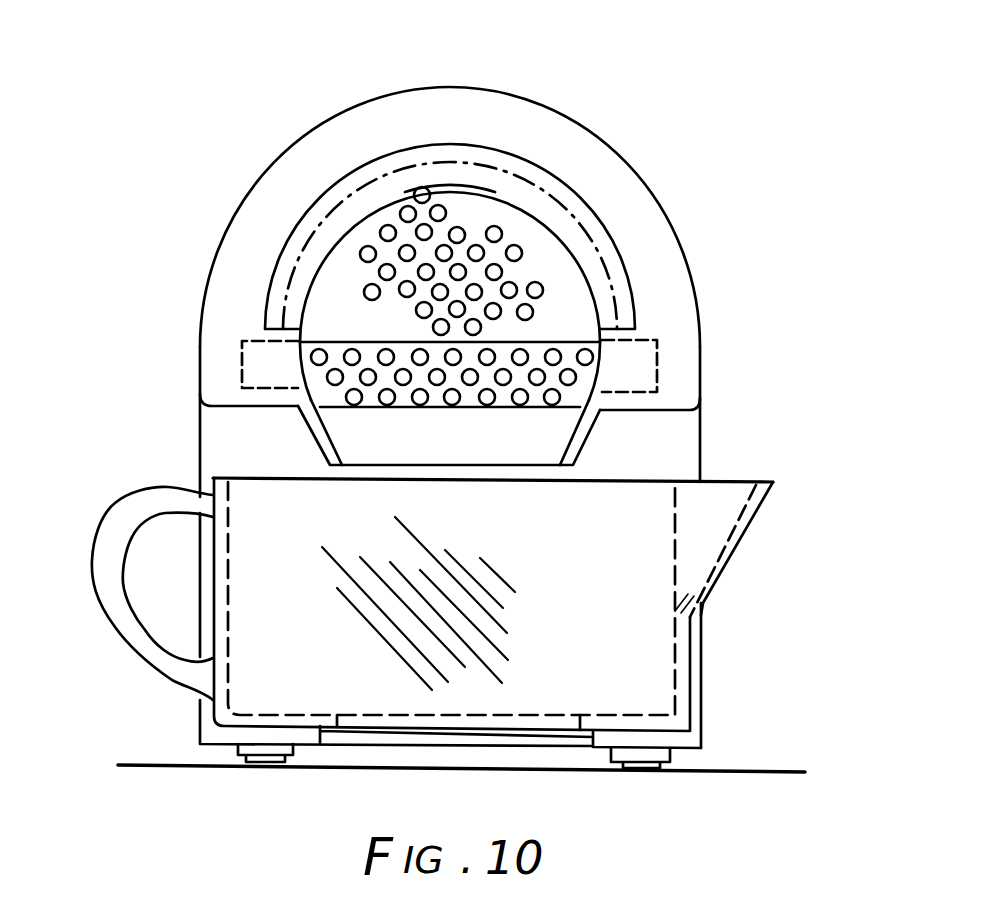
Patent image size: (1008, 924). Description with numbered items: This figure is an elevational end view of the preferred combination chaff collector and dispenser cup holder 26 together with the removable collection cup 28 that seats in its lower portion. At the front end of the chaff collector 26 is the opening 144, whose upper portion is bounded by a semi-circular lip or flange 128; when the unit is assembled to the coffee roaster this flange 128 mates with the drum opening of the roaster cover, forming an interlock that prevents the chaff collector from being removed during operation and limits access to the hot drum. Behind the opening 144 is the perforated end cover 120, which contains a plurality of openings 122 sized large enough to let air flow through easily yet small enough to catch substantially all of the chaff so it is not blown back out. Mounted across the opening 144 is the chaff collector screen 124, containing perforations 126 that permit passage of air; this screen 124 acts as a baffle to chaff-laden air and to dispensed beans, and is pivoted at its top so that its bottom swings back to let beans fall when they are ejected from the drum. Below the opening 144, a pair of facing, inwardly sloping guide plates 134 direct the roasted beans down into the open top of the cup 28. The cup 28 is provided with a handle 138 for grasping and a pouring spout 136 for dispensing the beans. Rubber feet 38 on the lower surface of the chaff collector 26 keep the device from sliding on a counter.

The chaff collector 26 is at (750, 125).
The removable cup 28 is at (645, 678).
The rubber feet 38 is at (267, 764).
The perforated end cover 120 is at (373, 228).
The openings 122 is at (410, 288).
The chaff collector screen 124 is at (587, 382).
The perforations 126 is at (390, 398).
The semi-circular flange 128 is at (618, 292).
The guide plates 134 is at (322, 440).
The pouring spout 136 is at (742, 527).
The handle 138 is at (153, 650).
The front opening 144 is at (437, 193).